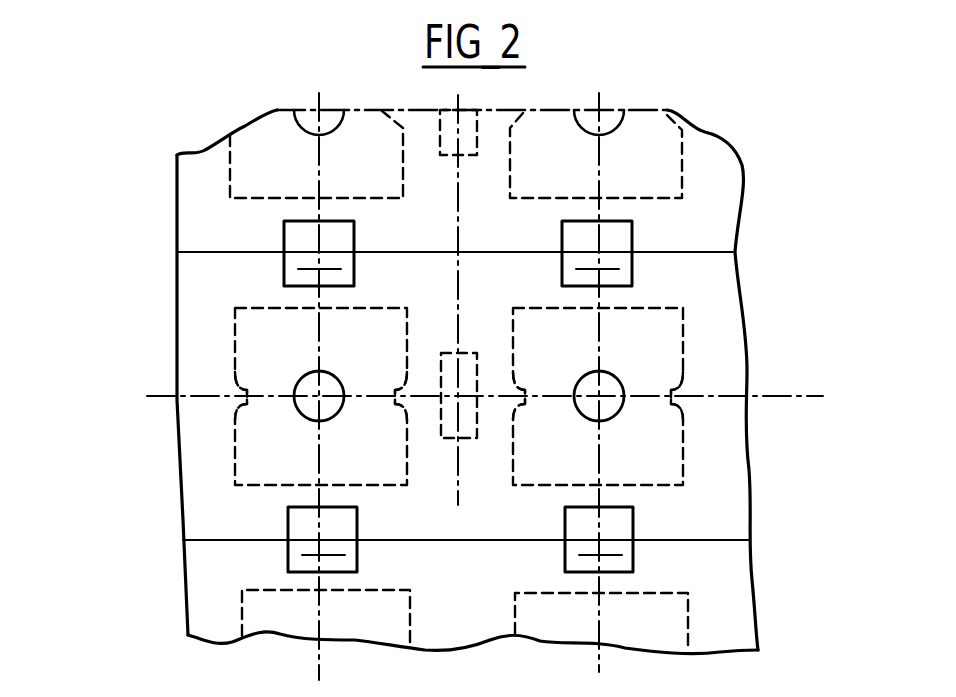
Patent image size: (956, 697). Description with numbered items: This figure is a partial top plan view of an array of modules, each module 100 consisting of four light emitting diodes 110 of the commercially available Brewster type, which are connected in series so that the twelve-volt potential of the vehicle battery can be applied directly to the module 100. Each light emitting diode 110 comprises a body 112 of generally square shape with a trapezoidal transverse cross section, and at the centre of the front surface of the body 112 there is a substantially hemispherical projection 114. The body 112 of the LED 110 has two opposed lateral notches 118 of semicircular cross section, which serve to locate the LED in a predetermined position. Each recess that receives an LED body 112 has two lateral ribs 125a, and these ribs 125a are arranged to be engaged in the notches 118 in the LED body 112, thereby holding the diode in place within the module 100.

The module 100 is at (136, 192).
The light emitting diode 110 is at (672, 344).
The body 112 is at (569, 353).
The projection 114 is at (610, 388).
The lateral notches 118 is at (408, 407).
The lateral ribs 125a is at (523, 398).